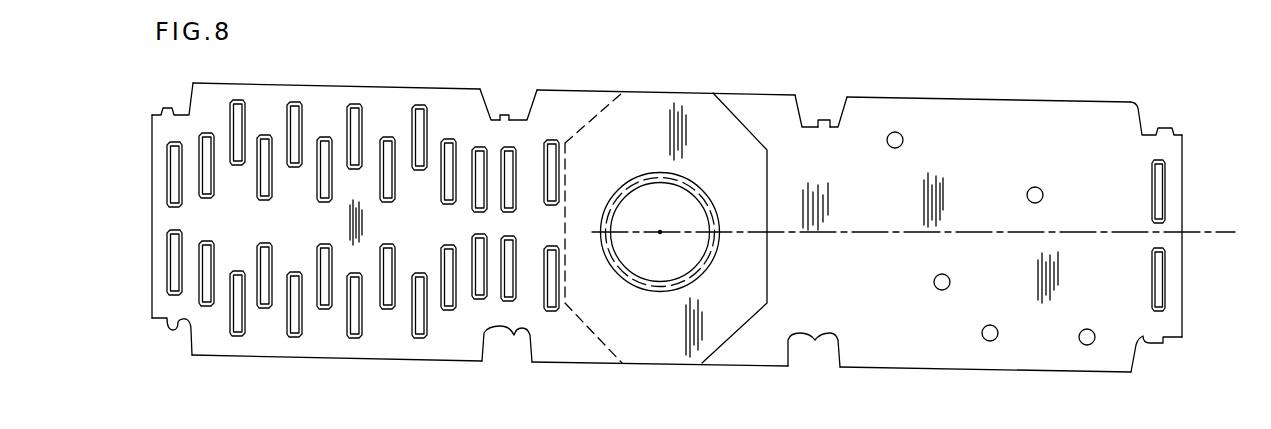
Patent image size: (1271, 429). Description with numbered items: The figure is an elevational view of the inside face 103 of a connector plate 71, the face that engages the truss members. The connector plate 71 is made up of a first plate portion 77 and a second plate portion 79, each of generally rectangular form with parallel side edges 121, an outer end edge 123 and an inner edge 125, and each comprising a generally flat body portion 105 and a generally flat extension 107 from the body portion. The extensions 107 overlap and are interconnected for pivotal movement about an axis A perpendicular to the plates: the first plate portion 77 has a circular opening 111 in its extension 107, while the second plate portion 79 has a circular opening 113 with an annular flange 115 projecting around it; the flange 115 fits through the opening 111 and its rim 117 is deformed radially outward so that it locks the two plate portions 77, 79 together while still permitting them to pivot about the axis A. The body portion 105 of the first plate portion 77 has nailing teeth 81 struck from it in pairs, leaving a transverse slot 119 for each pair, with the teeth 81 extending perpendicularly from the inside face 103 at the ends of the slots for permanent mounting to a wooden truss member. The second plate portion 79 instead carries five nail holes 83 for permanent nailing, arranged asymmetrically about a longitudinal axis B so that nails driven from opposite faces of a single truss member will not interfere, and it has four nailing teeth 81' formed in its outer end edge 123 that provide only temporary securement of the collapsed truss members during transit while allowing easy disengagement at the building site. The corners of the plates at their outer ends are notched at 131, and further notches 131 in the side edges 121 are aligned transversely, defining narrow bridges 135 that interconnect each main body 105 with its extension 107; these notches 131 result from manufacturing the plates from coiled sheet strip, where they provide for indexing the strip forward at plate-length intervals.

The first connector plate 71 is at (391, 90).
The first plate portion 77 is at (460, 90).
The second plate portion 79 is at (913, 97).
The nailing teeth 81 is at (363, 219).
The nailing teeth 81' is at (1125, 238).
The nail holes 83 is at (1030, 188).
The inside face 103 is at (314, 239).
The body portion 105 is at (1078, 120).
The extension 107 is at (657, 110).
The circular opening 111 is at (694, 196).
The circular opening 113 is at (690, 258).
The annular flange 115 is at (637, 178).
The rim 117 is at (688, 178).
The slot 119 is at (1158, 185).
The side edges 121 is at (337, 82).
The outer end edge 123 is at (152, 228).
The inner edge 125 is at (598, 112).
The notches 131 is at (190, 100).
The narrow bridges 135 is at (495, 122).
The axis A is at (660, 234).
The longitudinal axis B is at (923, 234).